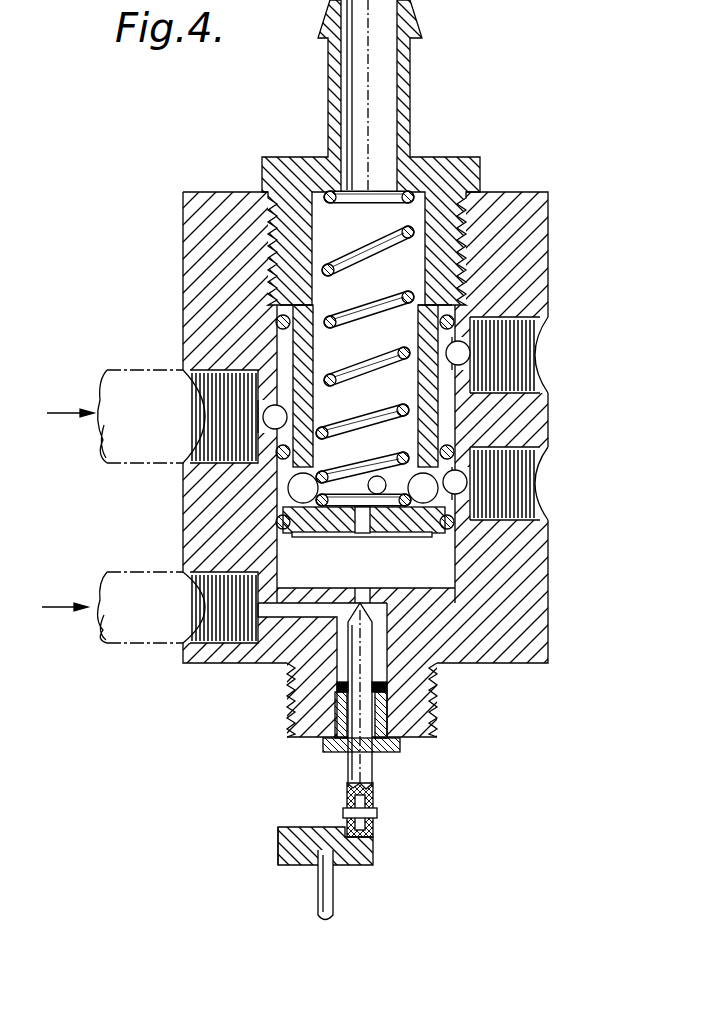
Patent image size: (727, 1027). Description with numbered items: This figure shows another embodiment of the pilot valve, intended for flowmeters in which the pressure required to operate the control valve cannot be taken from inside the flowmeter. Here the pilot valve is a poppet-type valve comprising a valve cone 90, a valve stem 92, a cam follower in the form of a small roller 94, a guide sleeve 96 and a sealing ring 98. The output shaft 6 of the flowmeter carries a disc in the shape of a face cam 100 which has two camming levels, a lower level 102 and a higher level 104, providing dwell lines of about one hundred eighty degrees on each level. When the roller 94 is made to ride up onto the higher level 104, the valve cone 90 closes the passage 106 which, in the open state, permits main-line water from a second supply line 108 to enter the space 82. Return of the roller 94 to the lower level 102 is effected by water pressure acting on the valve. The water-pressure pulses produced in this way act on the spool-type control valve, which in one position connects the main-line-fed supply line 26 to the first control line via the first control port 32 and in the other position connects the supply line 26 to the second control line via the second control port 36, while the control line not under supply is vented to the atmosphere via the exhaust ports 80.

The output shaft 6 is at (328, 902).
The supply line 26 is at (153, 383).
The first control port 32 is at (460, 487).
The second control port 36 is at (463, 360).
The exhaust ports 80 is at (423, 507).
The space 82 is at (290, 555).
The valve cone 90 is at (422, 697).
The valve stem 92 is at (363, 763).
The roller 94 is at (363, 805).
The guide sleeve 96 is at (328, 750).
The sealing ring 98 is at (337, 683).
The face cam 100 is at (375, 850).
The lower camming level 102 is at (333, 820).
The higher camming level 104 is at (287, 823).
The passage 106 is at (363, 540).
The second supply line 108 is at (127, 578).